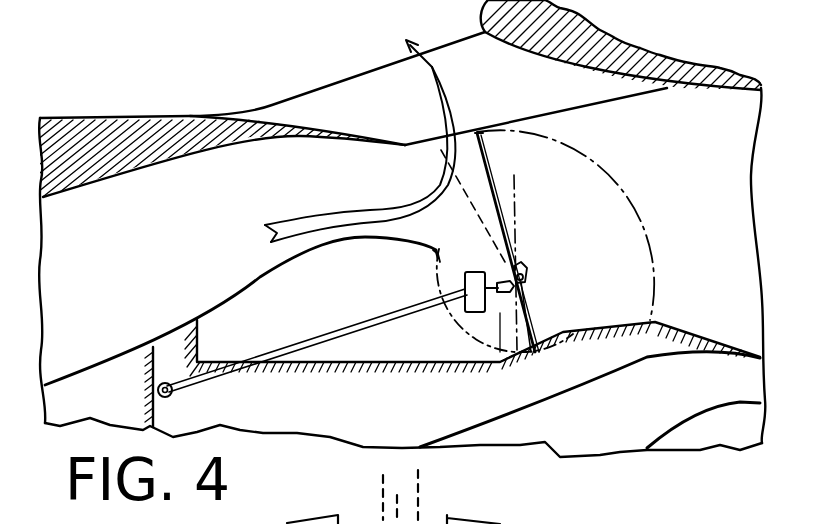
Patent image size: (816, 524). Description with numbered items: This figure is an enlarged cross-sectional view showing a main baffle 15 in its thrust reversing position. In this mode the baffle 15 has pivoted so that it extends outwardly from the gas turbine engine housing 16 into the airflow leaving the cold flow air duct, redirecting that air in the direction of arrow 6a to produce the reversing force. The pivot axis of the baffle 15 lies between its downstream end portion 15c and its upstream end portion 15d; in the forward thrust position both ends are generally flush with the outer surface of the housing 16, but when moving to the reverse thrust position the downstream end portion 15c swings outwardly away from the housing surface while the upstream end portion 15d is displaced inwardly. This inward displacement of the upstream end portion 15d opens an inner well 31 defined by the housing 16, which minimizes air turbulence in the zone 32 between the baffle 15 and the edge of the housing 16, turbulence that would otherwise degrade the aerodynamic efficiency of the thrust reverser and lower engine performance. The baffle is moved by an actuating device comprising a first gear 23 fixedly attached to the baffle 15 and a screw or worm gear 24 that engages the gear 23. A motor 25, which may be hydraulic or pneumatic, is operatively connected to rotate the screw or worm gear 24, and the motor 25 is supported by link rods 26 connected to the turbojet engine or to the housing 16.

The arrow 6a is at (430, 56).
The main baffles 15 is at (555, 183).
The downstream end portion 15c is at (497, 200).
The upstream end portion 15d is at (531, 312).
The gas turbine engine housing 16 is at (345, 242).
The first gear 23 is at (514, 272).
The screw or worm gear 24 is at (525, 362).
The motor 25 is at (472, 282).
The link rods 26 is at (250, 361).
The inner well 31 is at (500, 313).
The zone 32 is at (457, 259).